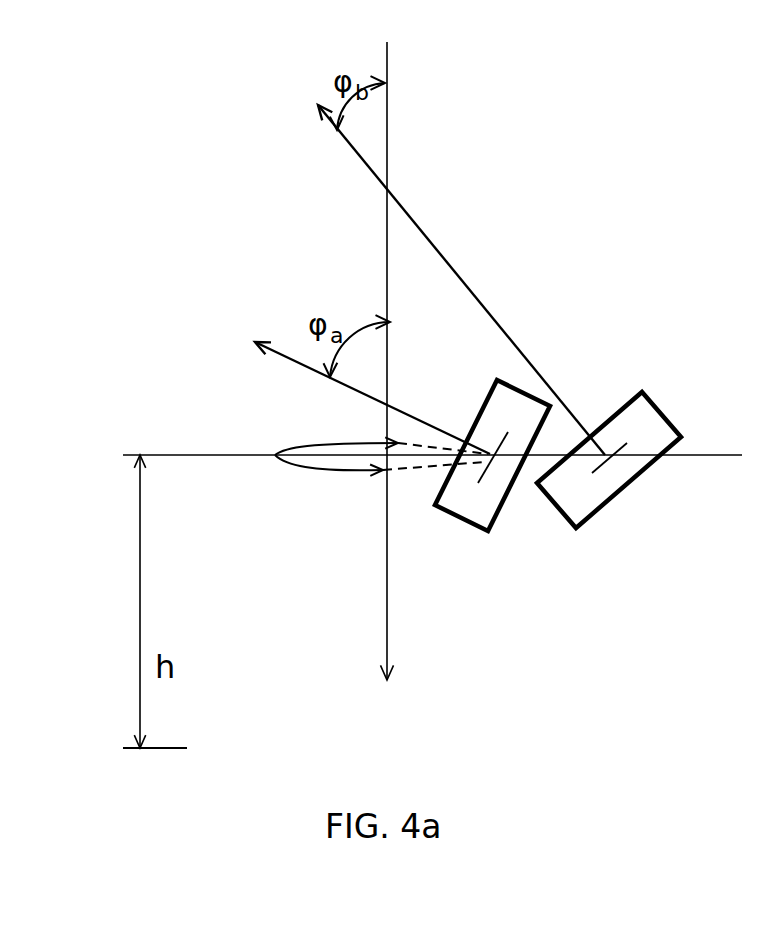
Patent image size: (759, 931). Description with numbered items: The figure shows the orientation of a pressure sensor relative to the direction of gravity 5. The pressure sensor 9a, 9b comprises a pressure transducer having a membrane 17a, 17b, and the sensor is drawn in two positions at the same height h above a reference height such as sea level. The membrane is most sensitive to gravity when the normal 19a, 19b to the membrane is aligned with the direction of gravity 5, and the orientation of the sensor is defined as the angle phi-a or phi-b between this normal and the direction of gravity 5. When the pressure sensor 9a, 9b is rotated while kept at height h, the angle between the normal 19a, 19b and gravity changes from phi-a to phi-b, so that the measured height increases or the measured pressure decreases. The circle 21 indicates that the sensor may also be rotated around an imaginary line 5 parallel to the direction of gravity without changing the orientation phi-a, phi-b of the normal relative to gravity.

The direction of gravity 5 is at (432, 371).
The pressure sensor 9a is at (476, 529).
The pressure sensor 9b is at (637, 483).
The membrane 17a is at (482, 486).
The membrane 17b is at (592, 473).
The normal to the membrane 19a is at (358, 398).
The normal to the membrane 19b is at (461, 280).
The circle 21 is at (292, 468).